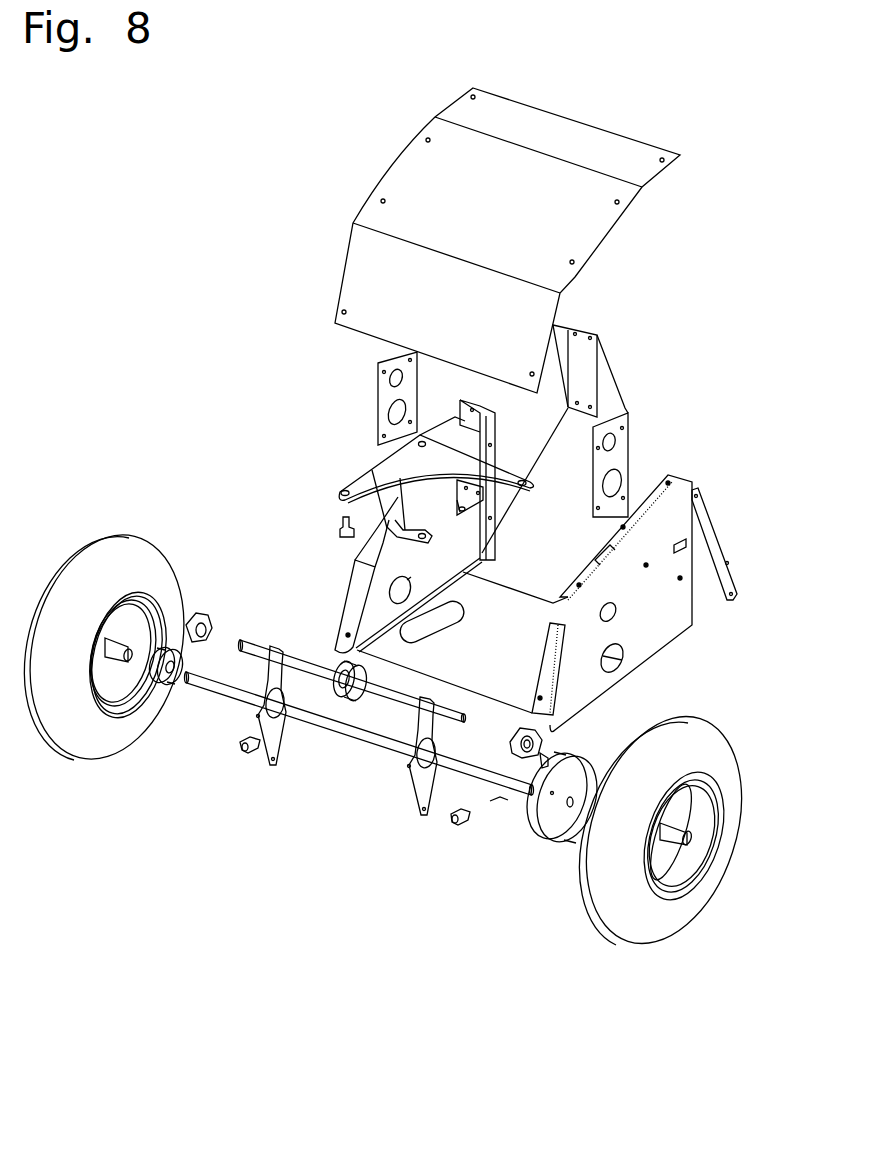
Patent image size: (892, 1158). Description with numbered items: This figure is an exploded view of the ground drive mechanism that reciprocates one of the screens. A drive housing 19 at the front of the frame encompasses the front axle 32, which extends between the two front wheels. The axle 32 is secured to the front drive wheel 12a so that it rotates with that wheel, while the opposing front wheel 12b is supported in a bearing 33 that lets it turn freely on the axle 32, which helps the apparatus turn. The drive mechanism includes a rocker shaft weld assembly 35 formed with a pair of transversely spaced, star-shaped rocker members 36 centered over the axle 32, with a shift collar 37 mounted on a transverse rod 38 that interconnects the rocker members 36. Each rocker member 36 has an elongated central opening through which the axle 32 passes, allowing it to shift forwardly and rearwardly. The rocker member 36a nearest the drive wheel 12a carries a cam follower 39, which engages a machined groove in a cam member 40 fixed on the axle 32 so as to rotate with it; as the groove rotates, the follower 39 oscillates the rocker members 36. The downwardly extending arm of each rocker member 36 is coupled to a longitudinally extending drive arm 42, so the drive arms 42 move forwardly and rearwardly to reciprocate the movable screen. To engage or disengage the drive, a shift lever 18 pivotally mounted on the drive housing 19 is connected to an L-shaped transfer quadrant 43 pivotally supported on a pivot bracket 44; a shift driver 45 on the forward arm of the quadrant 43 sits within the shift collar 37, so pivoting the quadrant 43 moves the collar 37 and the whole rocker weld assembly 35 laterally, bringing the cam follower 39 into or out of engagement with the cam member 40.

The drive housing 19 is at (284, 280).
The pivot bracket 44 is at (470, 400).
The transfer quadrant 43 is at (385, 460).
The shift driver 45 is at (338, 518).
The shift lever 18 is at (710, 517).
The transverse rod 38 is at (363, 700).
The front axle 32 is at (542, 758).
The shift collar 37 is at (363, 676).
The rocker member 36 is at (258, 716).
The rocker member 36a is at (418, 790).
The cam follower 39 is at (447, 785).
The drive arm 42 is at (310, 712).
The bearing 33 is at (180, 635).
The front wheel 12b is at (100, 752).
The rocker shaft weld assembly 35 is at (228, 805).
The front drive wheel 12a is at (647, 913).
The cam member 40 is at (580, 773).